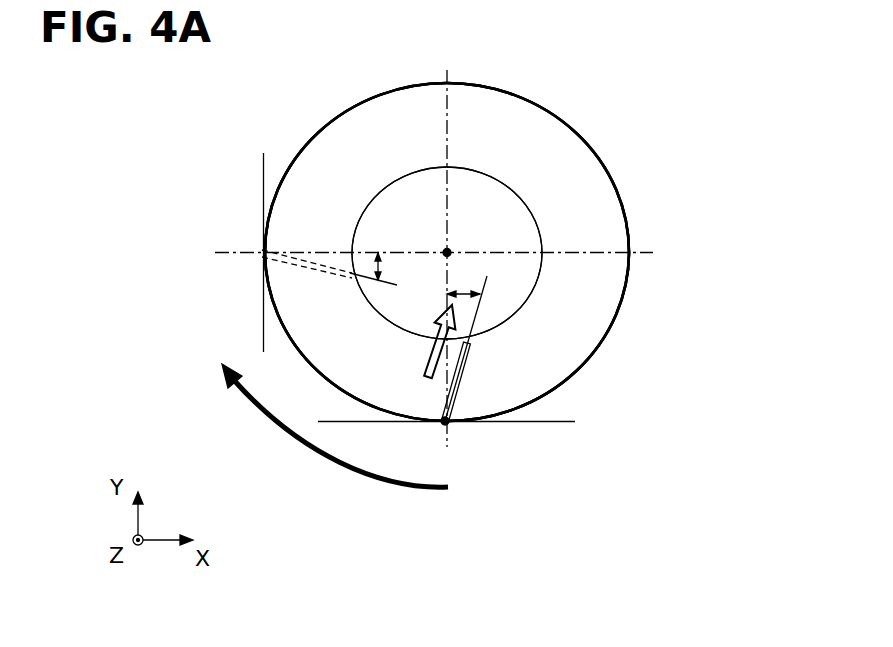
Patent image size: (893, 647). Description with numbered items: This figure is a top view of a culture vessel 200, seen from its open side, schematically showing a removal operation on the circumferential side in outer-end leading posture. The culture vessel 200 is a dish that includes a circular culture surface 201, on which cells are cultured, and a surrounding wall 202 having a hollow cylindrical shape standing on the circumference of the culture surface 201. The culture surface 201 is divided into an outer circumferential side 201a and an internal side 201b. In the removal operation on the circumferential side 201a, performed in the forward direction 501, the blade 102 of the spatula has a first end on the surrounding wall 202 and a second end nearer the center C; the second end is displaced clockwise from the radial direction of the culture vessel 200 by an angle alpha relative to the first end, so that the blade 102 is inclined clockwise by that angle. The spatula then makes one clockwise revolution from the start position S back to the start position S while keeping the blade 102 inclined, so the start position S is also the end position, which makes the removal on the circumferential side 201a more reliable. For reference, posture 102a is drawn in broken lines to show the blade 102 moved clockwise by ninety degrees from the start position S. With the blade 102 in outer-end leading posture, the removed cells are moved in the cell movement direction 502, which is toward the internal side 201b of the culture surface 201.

The culture vessel 200 is at (497, 72).
The surrounding wall 202 is at (557, 118).
The culture surface 201 is at (702, 178).
The circumferential side 201a is at (563, 207).
The internal side 201b is at (520, 245).
The center C is at (449, 251).
The posture 102a is at (303, 253).
The blade 102 is at (458, 397).
The start position S is at (440, 427).
The cell movement direction 502 is at (427, 347).
The forward direction 501 is at (265, 429).